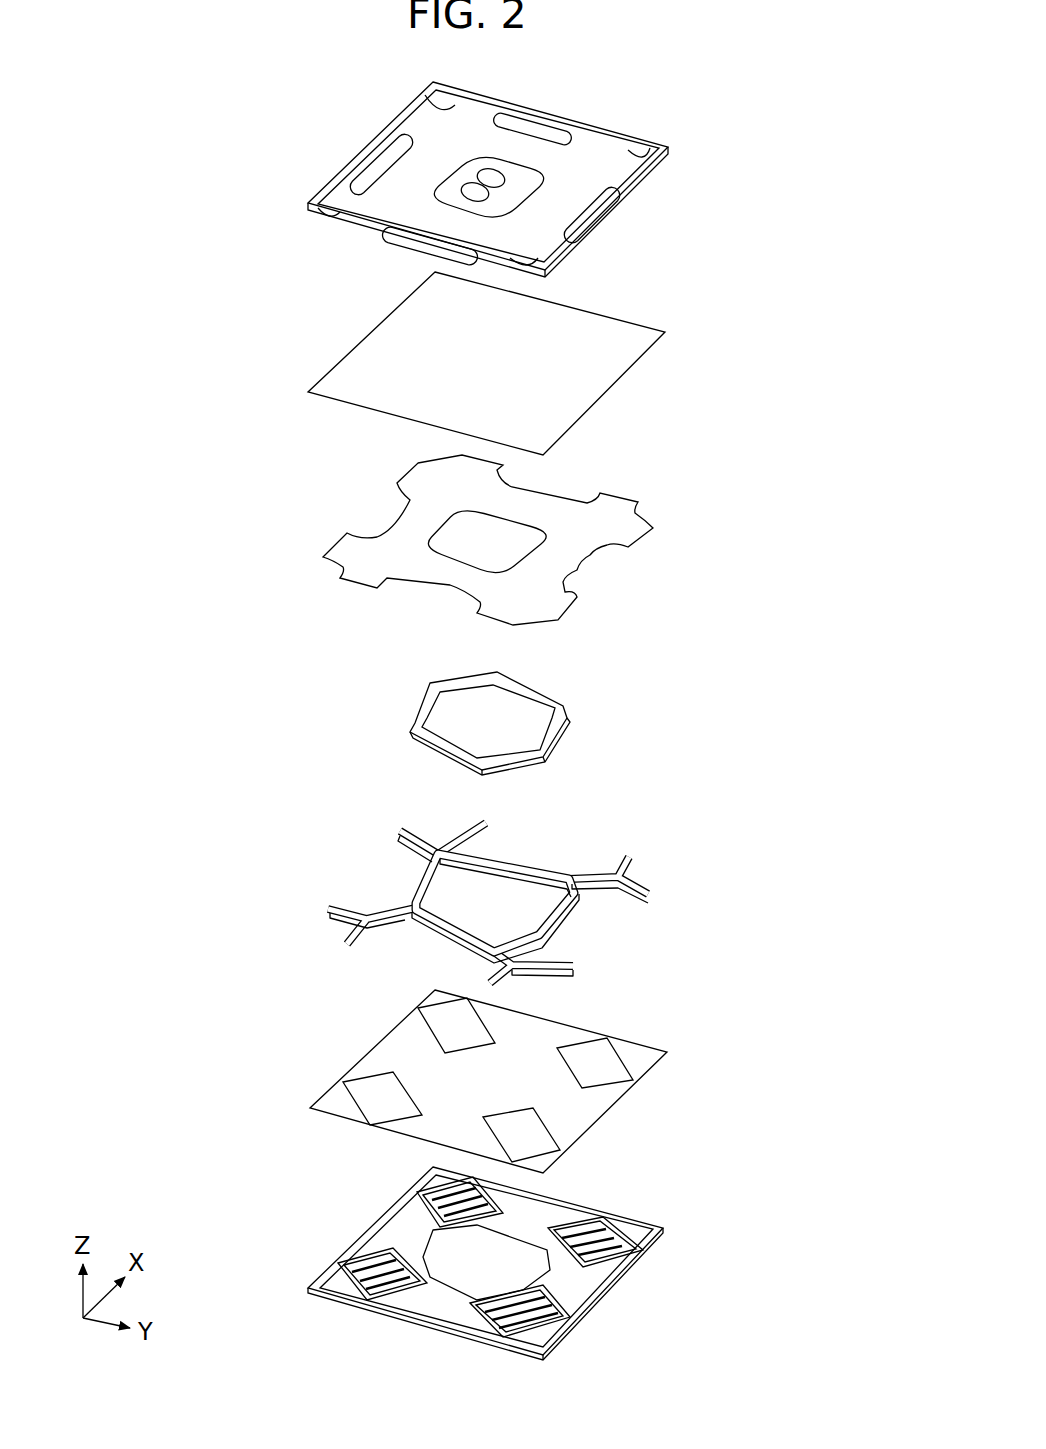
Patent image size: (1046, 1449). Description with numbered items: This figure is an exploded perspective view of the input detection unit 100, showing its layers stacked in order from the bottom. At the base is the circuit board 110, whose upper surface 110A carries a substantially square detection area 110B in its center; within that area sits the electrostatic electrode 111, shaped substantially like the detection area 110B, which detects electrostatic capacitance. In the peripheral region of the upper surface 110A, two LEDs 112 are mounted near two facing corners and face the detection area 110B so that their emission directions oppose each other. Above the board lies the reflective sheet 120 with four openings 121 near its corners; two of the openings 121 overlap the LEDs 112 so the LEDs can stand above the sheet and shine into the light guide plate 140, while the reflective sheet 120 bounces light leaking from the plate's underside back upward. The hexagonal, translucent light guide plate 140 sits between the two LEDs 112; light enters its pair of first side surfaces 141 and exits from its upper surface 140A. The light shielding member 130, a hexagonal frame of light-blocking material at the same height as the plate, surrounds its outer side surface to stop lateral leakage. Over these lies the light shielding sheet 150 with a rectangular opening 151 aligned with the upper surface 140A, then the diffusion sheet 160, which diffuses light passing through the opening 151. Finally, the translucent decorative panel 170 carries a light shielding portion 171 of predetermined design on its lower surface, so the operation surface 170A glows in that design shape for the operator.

The input detection unit 100 is at (852, 74).
The decorative panel 170 is at (529, 168).
The operation surface 170A is at (570, 120).
The light shielding portion 171 is at (638, 183).
The diffusion sheet 160 is at (667, 332).
The light shielding sheet 150 is at (520, 540).
The opening 151 is at (518, 546).
The light guide plate 140 is at (478, 709).
The upper surface 140A is at (462, 718).
The first side surfaces 141 is at (465, 682).
The light shielding member 130 is at (604, 836).
The reflective sheet 120 is at (497, 1077).
The openings 121 is at (438, 1021).
The circuit board 110 is at (512, 1270).
The upper surface 110A is at (610, 1290).
The detection area 110B is at (437, 1327).
The electrostatic electrode 111 is at (472, 1267).
The LEDs 112 is at (440, 1172).